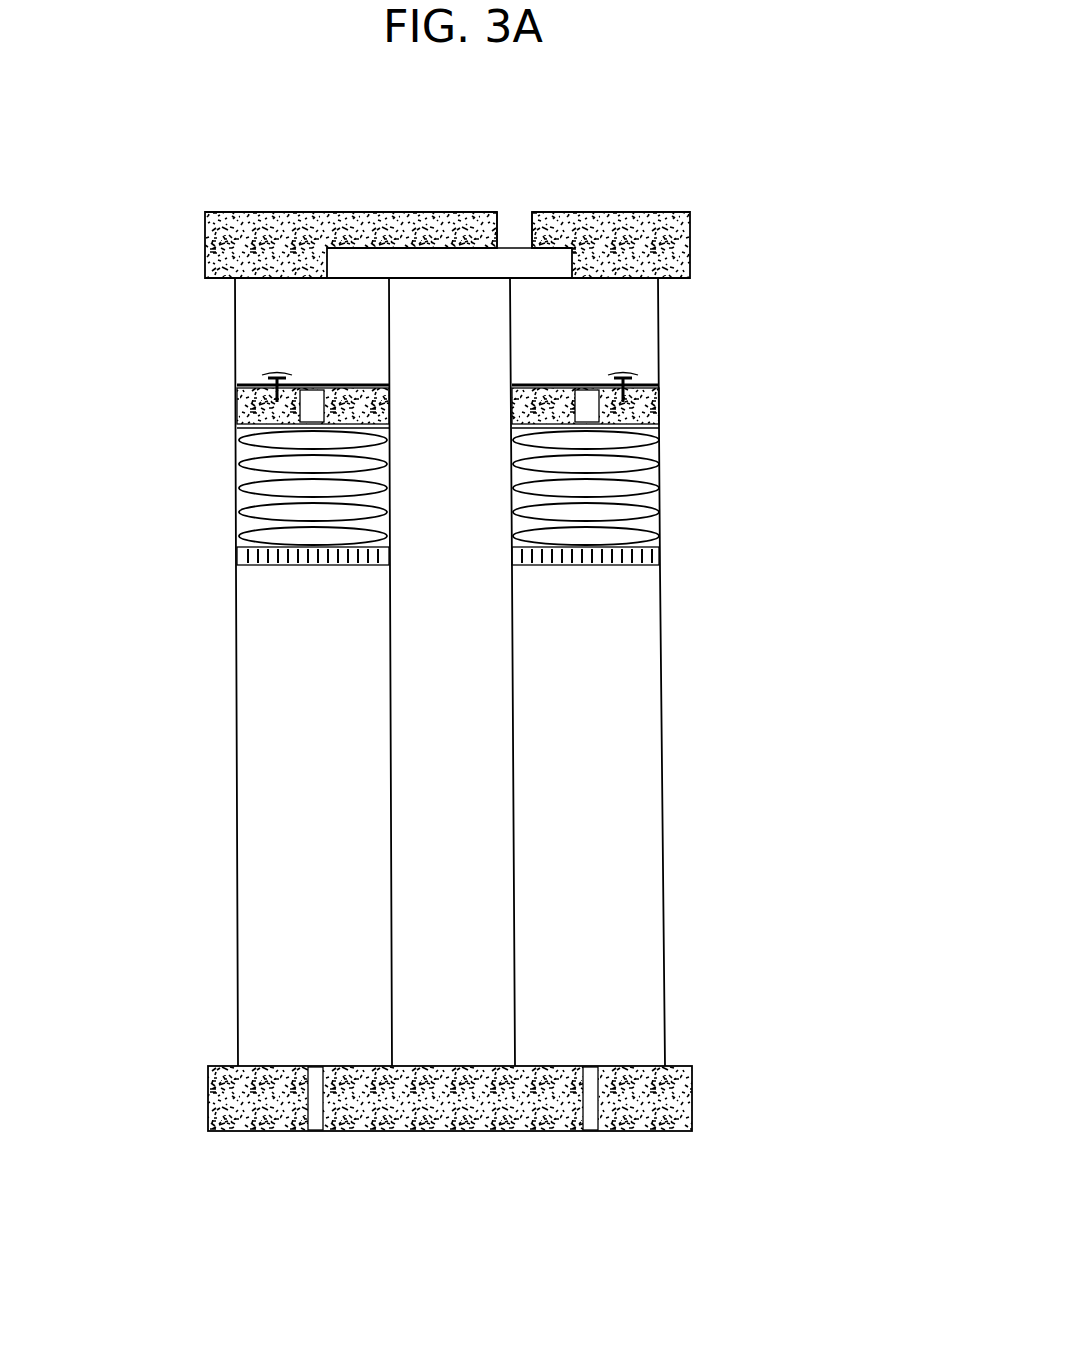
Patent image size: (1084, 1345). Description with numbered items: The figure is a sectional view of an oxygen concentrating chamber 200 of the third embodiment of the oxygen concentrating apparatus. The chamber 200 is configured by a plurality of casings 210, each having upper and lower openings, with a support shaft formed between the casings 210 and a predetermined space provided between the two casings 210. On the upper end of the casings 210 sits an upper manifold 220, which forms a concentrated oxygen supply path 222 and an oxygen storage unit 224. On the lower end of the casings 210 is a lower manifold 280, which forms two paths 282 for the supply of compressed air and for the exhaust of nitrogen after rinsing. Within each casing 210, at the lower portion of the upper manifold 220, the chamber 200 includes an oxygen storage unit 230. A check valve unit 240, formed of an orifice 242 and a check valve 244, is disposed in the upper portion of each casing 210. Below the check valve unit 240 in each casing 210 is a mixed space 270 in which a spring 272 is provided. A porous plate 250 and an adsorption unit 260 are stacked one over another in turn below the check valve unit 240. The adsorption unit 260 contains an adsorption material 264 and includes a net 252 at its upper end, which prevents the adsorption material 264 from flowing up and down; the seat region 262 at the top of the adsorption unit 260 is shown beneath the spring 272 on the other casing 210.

The oxygen concentrating chamber 200 is at (697, 196).
The casing 210 is at (668, 305).
The upper manifold 220 is at (207, 246).
The concentrated oxygen supply path 222 is at (530, 215).
The oxygen storage unit 224 is at (345, 265).
The oxygen storage unit 230 is at (598, 344).
The check valve unit 240 is at (655, 413).
The orifice 242 is at (290, 382).
The check valve 244 is at (645, 392).
The porous plate 250 is at (238, 548).
The net 252 is at (245, 553).
The adsorption unit 260 is at (655, 740).
The right spring seat 262 is at (622, 563).
The adsorption material 264 is at (640, 865).
The mixed space 270 is at (655, 505).
The spring 272 is at (238, 455).
The lower manifold 280 is at (692, 1100).
The path 282 is at (327, 1133).